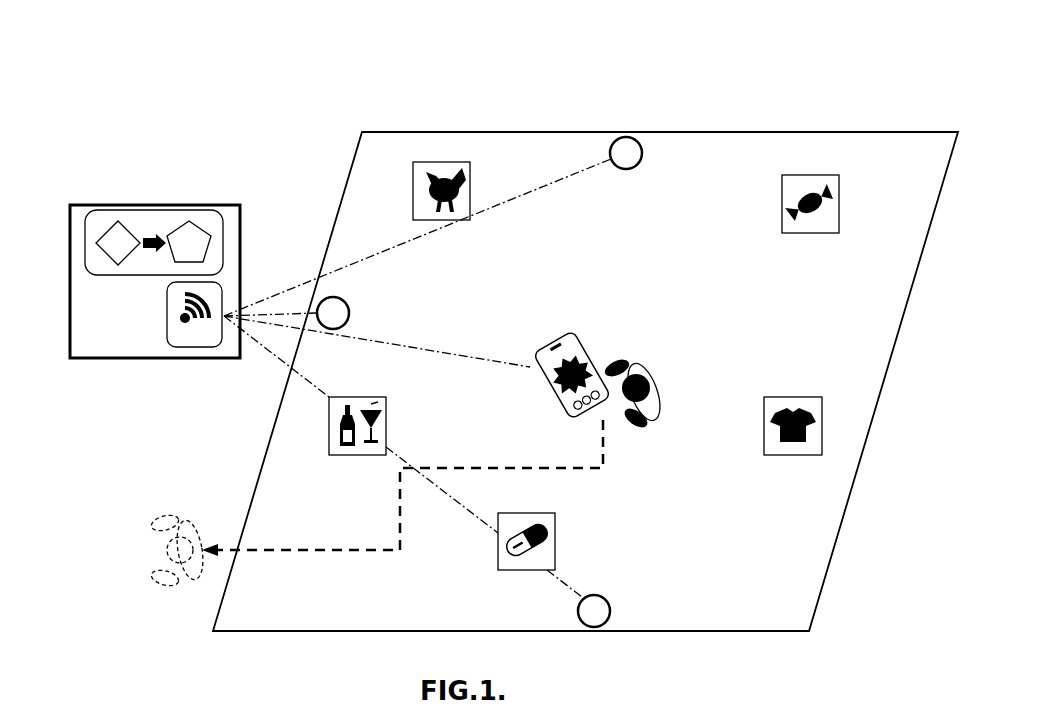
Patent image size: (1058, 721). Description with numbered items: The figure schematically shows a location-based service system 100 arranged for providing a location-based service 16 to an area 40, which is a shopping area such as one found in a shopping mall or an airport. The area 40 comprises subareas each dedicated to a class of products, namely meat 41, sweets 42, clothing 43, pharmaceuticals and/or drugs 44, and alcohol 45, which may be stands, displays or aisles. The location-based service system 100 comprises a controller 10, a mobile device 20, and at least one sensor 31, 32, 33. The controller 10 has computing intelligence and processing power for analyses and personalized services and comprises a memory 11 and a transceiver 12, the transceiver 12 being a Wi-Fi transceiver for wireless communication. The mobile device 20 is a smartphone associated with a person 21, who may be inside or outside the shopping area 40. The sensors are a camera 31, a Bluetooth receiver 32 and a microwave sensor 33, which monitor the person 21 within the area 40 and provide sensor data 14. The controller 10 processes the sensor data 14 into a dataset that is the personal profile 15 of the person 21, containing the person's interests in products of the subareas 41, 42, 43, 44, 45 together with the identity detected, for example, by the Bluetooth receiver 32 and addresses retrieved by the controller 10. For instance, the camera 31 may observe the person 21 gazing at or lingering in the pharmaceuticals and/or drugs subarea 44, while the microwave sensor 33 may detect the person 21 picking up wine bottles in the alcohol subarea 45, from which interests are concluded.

The location-based service system 100 is at (268, 56).
The controller 10 is at (76, 198).
The memory 11 is at (127, 276).
The transceiver 12 is at (168, 298).
The sensor data 14 is at (118, 222).
The personal profile 15 is at (190, 222).
The location-based service 16 is at (577, 352).
The mobile device 20 is at (558, 336).
The person 21 is at (654, 380).
The camera 31 is at (640, 163).
The Bluetooth receiver 32 is at (350, 313).
The microwave sensor 33 is at (611, 607).
The area 40 is at (795, 553).
The meat subarea 41 is at (470, 200).
The sweets subarea 42 is at (840, 192).
The clothing subarea 43 is at (822, 397).
The pharmaceuticals and/or drugs subarea 44 is at (498, 555).
The alcohol subarea 45 is at (355, 397).